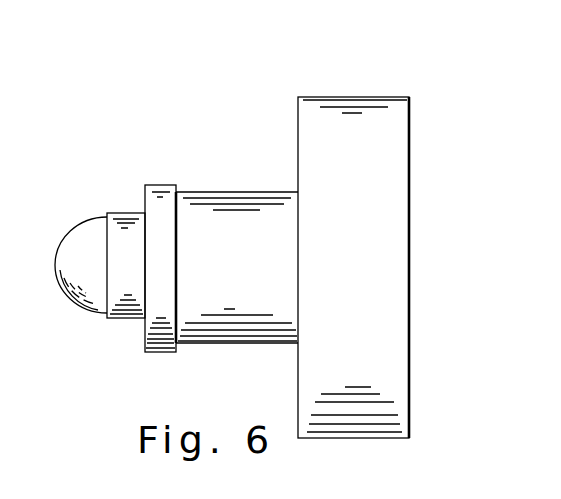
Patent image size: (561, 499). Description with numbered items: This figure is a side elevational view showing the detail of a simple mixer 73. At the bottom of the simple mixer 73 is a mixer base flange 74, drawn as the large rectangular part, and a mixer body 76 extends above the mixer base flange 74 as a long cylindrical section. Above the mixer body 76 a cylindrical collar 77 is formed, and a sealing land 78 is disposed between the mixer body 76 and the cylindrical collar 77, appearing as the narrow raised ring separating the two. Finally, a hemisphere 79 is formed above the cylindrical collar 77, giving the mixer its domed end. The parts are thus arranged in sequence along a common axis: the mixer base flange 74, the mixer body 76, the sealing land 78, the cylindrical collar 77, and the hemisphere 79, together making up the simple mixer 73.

The simple mixer 73 is at (404, 78).
The mixer base flange 74 is at (306, 97).
The mixer body 76 is at (218, 192).
The cylindrical collar 77 is at (120, 213).
The sealing land 78 is at (158, 185).
The hemisphere 79 is at (80, 219).